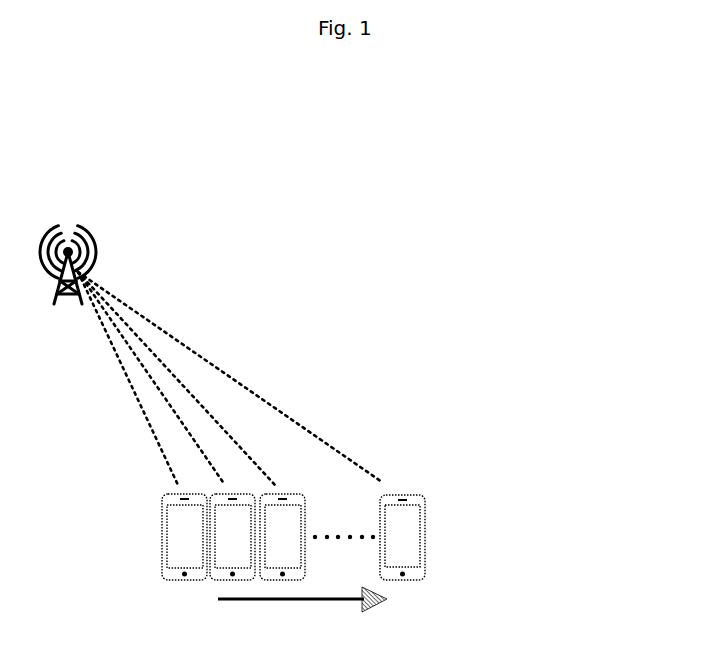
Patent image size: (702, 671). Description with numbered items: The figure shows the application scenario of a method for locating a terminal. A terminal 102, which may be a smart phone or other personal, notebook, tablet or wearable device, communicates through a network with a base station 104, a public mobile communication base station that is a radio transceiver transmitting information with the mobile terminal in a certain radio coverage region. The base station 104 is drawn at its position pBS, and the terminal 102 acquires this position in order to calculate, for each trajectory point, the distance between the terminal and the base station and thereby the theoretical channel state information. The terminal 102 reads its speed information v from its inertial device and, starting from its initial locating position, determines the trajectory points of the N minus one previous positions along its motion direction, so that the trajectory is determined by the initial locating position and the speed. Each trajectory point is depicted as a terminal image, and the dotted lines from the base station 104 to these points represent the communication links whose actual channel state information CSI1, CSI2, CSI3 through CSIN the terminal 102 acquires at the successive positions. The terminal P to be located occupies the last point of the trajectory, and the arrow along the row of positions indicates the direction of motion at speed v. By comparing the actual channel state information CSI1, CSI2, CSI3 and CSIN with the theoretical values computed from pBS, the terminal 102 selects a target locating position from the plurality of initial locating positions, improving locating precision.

The base station 104 is at (95, 242).
The terminal 102 is at (483, 501).
The base station position pBS is at (44, 326).
The actual channel state information at first trajectory point CSI1 is at (166, 526).
The actual channel state information at second trajectory point CSI2 is at (224, 526).
The actual channel state information at third trajectory point CSI3 is at (291, 526).
The actual channel state information at N-th trajectory point CSIN is at (401, 487).
The speed information v is at (302, 612).
The terminal to be located P is at (407, 619).